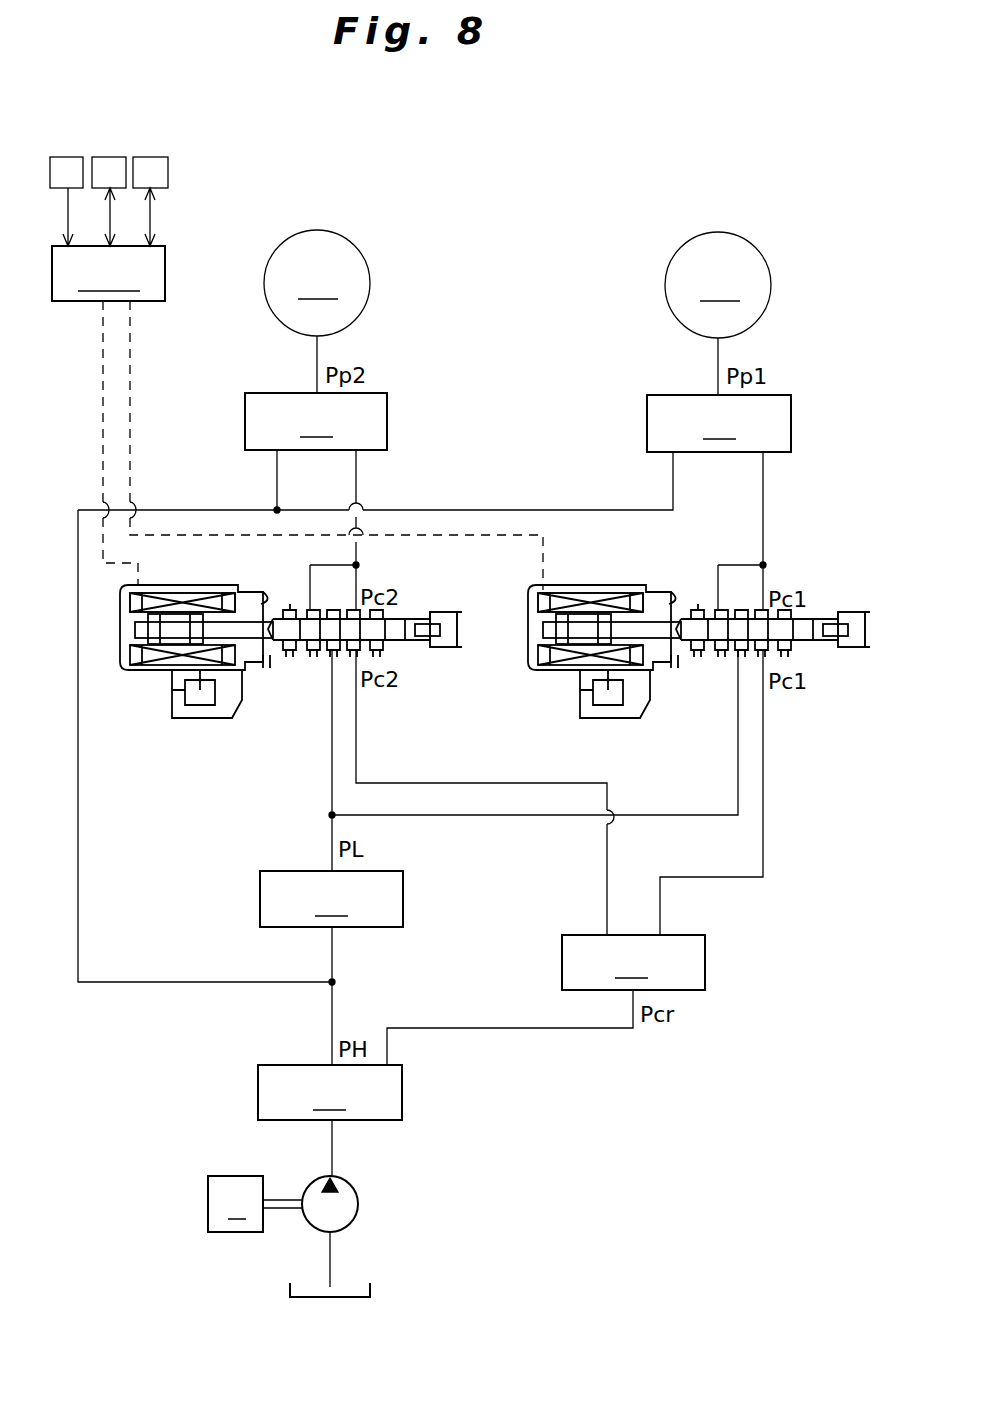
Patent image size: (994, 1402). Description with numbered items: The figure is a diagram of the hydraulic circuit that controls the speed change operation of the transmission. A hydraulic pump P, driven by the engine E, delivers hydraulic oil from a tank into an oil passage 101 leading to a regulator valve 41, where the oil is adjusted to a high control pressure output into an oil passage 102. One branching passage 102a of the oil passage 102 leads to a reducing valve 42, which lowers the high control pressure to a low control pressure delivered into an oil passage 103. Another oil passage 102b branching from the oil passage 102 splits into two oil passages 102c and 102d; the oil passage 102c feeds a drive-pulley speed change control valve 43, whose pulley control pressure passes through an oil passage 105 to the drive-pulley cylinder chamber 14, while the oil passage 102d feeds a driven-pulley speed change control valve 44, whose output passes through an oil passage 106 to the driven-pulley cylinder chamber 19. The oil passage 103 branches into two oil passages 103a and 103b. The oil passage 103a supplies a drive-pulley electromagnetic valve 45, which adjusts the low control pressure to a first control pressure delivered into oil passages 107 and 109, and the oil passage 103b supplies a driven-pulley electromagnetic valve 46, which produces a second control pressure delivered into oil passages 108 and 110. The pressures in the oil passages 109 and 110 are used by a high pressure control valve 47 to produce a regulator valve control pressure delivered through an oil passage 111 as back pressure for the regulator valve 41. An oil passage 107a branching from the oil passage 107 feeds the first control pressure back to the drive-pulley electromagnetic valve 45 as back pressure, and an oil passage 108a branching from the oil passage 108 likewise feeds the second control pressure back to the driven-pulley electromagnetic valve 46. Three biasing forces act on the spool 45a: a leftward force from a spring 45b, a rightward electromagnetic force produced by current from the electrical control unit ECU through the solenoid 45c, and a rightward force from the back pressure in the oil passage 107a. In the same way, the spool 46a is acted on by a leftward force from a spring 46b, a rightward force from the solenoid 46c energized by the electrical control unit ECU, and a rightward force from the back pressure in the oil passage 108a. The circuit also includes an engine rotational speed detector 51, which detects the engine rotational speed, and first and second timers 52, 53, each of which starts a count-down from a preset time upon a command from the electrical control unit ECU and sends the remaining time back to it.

The engine rotational speed detector 51 is at (68, 157).
The first timer 52 is at (110, 157).
The second timer 53 is at (152, 157).
The electrical control unit ECU is at (108, 273).
The driven-pulley cylinder chamber 19 is at (317, 283).
The drive-pulley cylinder chamber 14 is at (718, 285).
The regulator valve 41 is at (330, 1092).
The reducing valve 42 is at (331, 899).
The drive-pulley speed change control valve 43 is at (719, 423).
The driven-pulley speed change control valve 44 is at (316, 421).
The drive-pulley electromagnetic valve 45 is at (850, 667).
The spool 45a is at (724, 650).
The spring 45b is at (841, 614).
The solenoid 45c is at (573, 598).
The driven-pulley electromagnetic valve 46 is at (442, 667).
The spool 46a is at (316, 650).
The spring 46b is at (433, 614).
The solenoid 46c is at (165, 598).
The high pressure control valve 47 is at (633, 962).
The oil passage 101 is at (332, 1150).
The oil passage 102 is at (332, 1030).
The branching passage 102a is at (334, 970).
The oil passage 102b is at (172, 982).
The oil passage 102c is at (548, 510).
The oil passage 102d is at (277, 491).
The oil passage 103 is at (332, 847).
The oil passage 103a is at (468, 817).
The oil passage 103b is at (332, 762).
The oil passage 105 is at (718, 371).
The oil passage 106 is at (318, 371).
The oil passage 107 is at (763, 507).
The oil passage 107a is at (718, 583).
The oil passage 108 is at (356, 481).
The oil passage 108a is at (310, 583).
The oil passage 109 is at (763, 759).
The oil passage 110 is at (356, 764).
The oil passage 111 is at (482, 1030).
The hydraulic pump P is at (357, 1192).
The engine E is at (255, 1204).